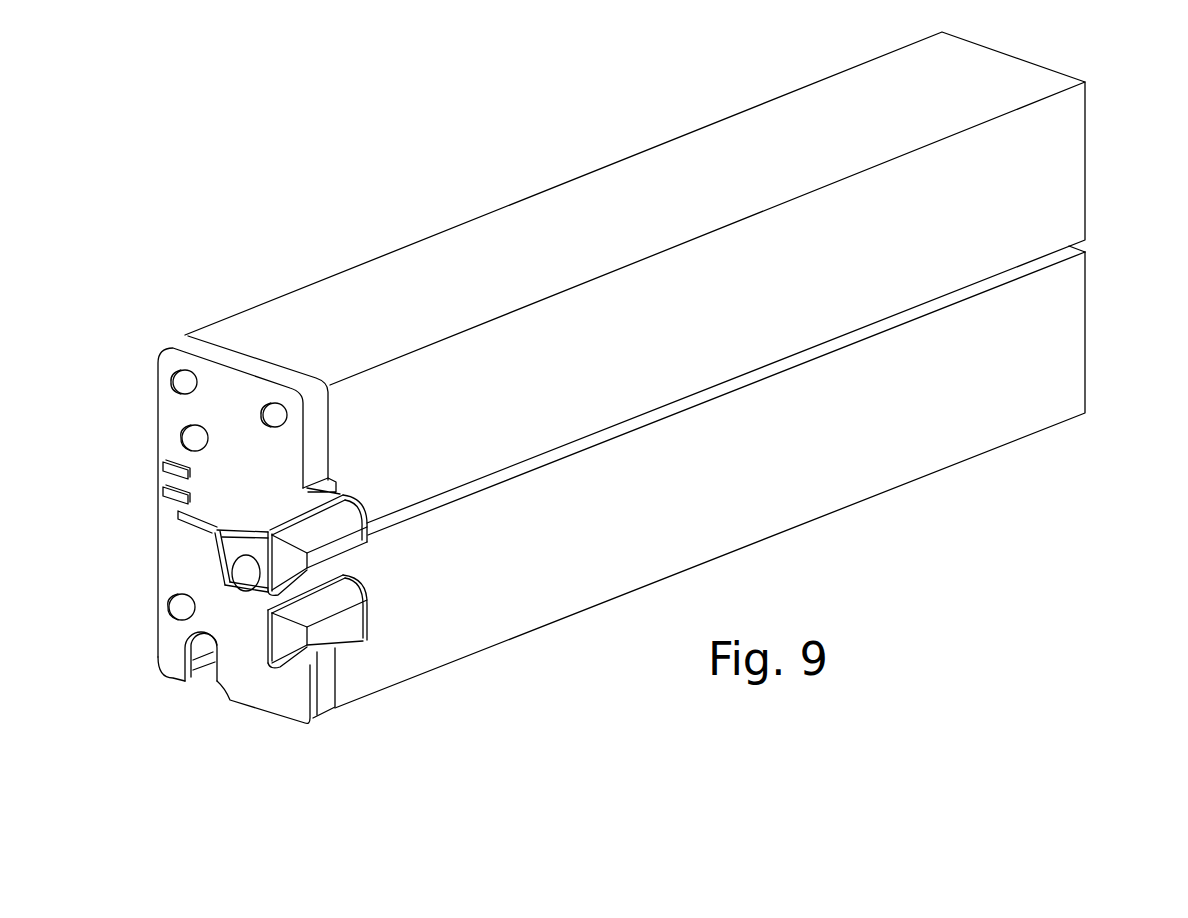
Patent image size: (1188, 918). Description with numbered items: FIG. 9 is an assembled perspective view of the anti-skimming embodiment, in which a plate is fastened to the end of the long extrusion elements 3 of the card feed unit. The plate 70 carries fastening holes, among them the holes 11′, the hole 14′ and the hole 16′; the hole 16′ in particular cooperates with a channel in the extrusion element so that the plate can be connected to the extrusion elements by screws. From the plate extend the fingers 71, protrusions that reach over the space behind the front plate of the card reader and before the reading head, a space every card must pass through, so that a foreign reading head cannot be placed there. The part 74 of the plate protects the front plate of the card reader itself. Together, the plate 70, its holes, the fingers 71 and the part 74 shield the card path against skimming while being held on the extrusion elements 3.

The rail bar 3 is at (987, 92).
The bracket plate 70 is at (293, 705).
The mounting holes 11′ is at (275, 415).
The hole 14′ is at (195, 438).
The hole 16′ is at (183, 605).
The part 74 is at (240, 493).
The fingers 71 is at (340, 549).